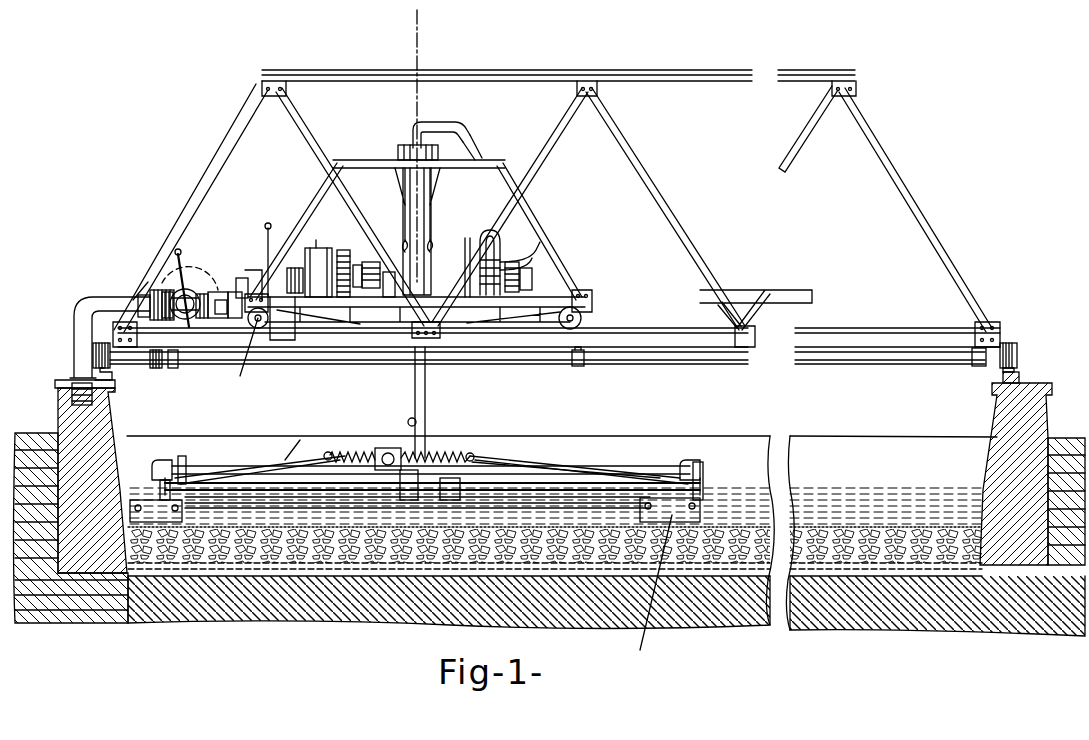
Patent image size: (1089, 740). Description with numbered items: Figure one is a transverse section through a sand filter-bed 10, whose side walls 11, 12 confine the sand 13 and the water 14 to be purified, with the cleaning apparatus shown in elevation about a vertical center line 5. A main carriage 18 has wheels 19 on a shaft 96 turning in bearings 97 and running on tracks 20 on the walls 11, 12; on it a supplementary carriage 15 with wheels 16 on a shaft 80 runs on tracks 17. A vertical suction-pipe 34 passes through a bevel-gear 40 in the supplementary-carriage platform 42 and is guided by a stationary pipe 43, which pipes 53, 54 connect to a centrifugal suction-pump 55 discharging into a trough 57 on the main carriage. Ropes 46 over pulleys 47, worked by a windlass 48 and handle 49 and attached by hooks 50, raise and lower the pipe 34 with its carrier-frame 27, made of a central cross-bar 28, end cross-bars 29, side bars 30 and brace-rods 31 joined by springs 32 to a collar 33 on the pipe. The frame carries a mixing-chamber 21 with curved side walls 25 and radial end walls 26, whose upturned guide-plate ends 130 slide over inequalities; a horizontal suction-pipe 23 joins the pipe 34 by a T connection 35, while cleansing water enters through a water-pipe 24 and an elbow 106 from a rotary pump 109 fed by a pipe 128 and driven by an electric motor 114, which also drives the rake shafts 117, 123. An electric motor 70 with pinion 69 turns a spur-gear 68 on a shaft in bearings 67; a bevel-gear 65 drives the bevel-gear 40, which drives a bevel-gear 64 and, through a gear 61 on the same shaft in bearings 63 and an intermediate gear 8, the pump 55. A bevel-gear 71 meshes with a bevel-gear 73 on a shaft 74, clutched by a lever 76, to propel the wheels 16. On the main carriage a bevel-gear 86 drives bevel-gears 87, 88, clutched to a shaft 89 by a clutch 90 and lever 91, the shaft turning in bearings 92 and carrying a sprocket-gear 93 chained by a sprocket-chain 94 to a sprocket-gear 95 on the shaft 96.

The center line 5 is at (419, 16).
The intermediate gear 8 is at (60, 388).
The sand filter-bed 10 is at (606, 557).
The side wall 11 is at (1040, 415).
The side wall 12 is at (58, 415).
The sand 13 is at (810, 527).
The water 14 is at (900, 515).
The supplementary carriage 15 is at (540, 262).
The wheels 16 is at (262, 330).
The tracks 17 is at (660, 336).
The main carriage 18 is at (195, 196).
The wheels 19 is at (93, 355).
The tracks 20 is at (112, 380).
The mixing-chamber 21 is at (160, 482).
The horizontal suction-pipe 23 is at (558, 508).
The water-pipe 24 is at (230, 466).
The curved side walls 25 is at (204, 496).
The radial end walls 26 is at (415, 510).
The carrier-frame 27 is at (312, 466).
The central cross-bar 28 is at (240, 492).
The end cross-bars 29 is at (186, 453).
The side bars 30 is at (298, 504).
The brace-rods 31 is at (262, 470).
The springs 32 is at (350, 452).
The collar 33 is at (400, 450).
The vertical suction-pipe 34 is at (427, 393).
The T connection 35 is at (408, 500).
The bevel-gear 40 is at (386, 297).
The supplementary-carriage platform 42 is at (572, 288).
The stationary pipe 43 is at (425, 208).
The chains or wire ropes 46 is at (403, 208).
The pulleys 47 is at (398, 152).
The windlass 48 is at (432, 238).
The handle 49 is at (470, 244).
The hooks 50 is at (403, 238).
The pipe 53 is at (440, 124).
The pipe 54 is at (482, 150).
The centrifugal suction-pump 55 is at (505, 252).
The trough 57 is at (790, 290).
The gear 61 is at (520, 270).
The bearings 63 is at (195, 275).
The bevel-gear 64 is at (416, 310).
The bevel-gear 65 is at (357, 287).
The bearings 67 is at (366, 262).
The spur-gear 68 is at (342, 250).
The pinion 69 is at (298, 293).
The electric motor 70 is at (312, 250).
The bevel-gear 71 is at (284, 321).
The bevel-gear 73 is at (252, 270).
The shaft 74 is at (248, 284).
The lever 76 is at (264, 230).
The shaft 80 is at (258, 318).
The bevel-gear 86 is at (192, 278).
The bevel-gear 87 is at (214, 320).
The bevel-gear 88 is at (180, 320).
The shaft 89 is at (230, 302).
The clutch 90 is at (190, 320).
The lever 91 is at (145, 284).
The bearings 92 is at (150, 298).
The sprocket-gear 93 is at (150, 298).
The sprocket-chain 94 is at (74, 325).
The sprocket-gear 95 is at (150, 365).
The shaft 96 is at (336, 366).
The bearings 97 is at (580, 366).
The elbow 106 is at (162, 460).
The rotary pump 109 is at (472, 454).
The electric motor 114 is at (409, 420).
The shaft 117 is at (290, 460).
The horizontal shaft 123 is at (590, 474).
The pipe 128 is at (452, 500).
The outer ends 130 is at (648, 589).